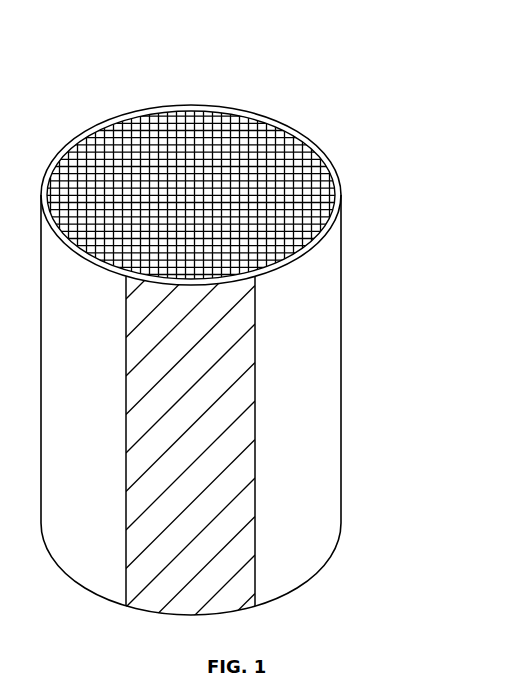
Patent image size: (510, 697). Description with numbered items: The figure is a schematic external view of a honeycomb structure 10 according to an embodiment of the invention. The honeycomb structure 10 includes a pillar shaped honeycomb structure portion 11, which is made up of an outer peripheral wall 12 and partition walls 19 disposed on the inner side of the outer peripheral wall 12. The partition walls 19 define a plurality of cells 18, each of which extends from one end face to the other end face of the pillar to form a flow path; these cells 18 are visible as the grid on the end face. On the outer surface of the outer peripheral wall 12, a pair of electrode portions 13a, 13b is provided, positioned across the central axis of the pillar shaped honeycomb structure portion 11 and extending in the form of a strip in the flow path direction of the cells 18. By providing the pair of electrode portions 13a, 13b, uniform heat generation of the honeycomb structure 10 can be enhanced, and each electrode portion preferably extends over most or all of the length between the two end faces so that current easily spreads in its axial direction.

The honeycomb structure 10 is at (243, 353).
The pillar shaped honeycomb structure portion 11 is at (243, 398).
The outer peripheral wall 12 is at (313, 409).
The electrode portion 13a is at (297, 433).
The electrode portion 13b is at (255, 362).
The cell 18 is at (73, 198).
The partition wall 19 is at (93, 170).